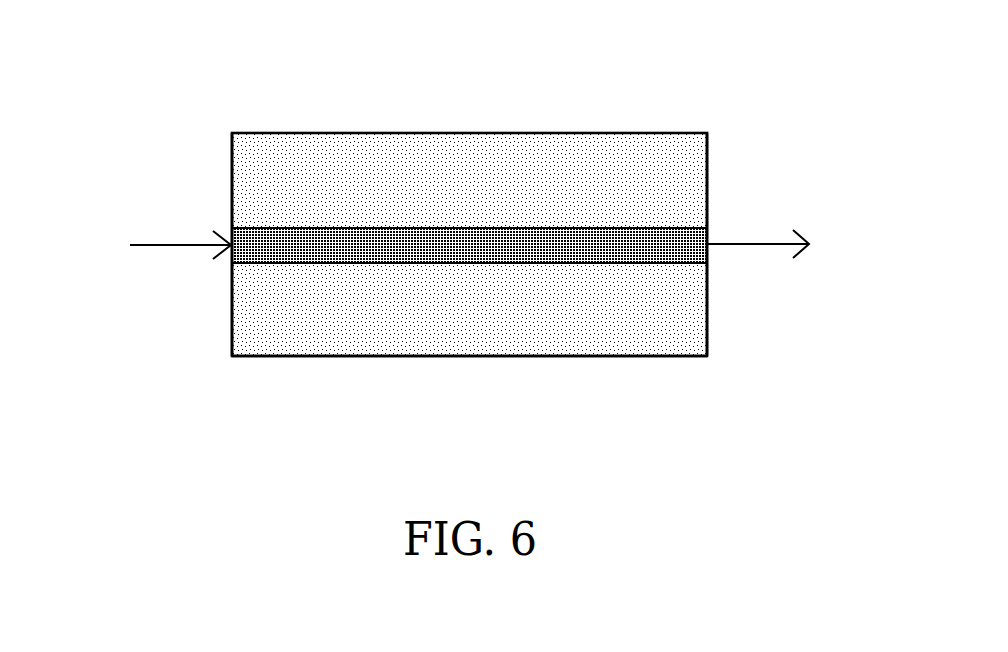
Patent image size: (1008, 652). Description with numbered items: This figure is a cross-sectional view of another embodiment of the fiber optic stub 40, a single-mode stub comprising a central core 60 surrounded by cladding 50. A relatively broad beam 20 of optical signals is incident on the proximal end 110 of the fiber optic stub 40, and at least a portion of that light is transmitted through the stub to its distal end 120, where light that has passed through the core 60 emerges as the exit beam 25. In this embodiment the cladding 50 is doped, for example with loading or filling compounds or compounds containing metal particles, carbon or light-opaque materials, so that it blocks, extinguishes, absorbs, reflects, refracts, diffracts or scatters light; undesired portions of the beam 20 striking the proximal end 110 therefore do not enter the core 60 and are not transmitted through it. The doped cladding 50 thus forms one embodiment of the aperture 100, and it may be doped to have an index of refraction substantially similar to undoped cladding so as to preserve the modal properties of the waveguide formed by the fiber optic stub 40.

The fiber optic stub 40 is at (467, 96).
The core 60 is at (387, 227).
The cladding 50 is at (469, 344).
The aperture 100 is at (533, 342).
The proximal end 110 is at (138, 129).
The distal end 120 is at (798, 126).
The beam 20 is at (162, 247).
The exit beam 25 is at (774, 244).